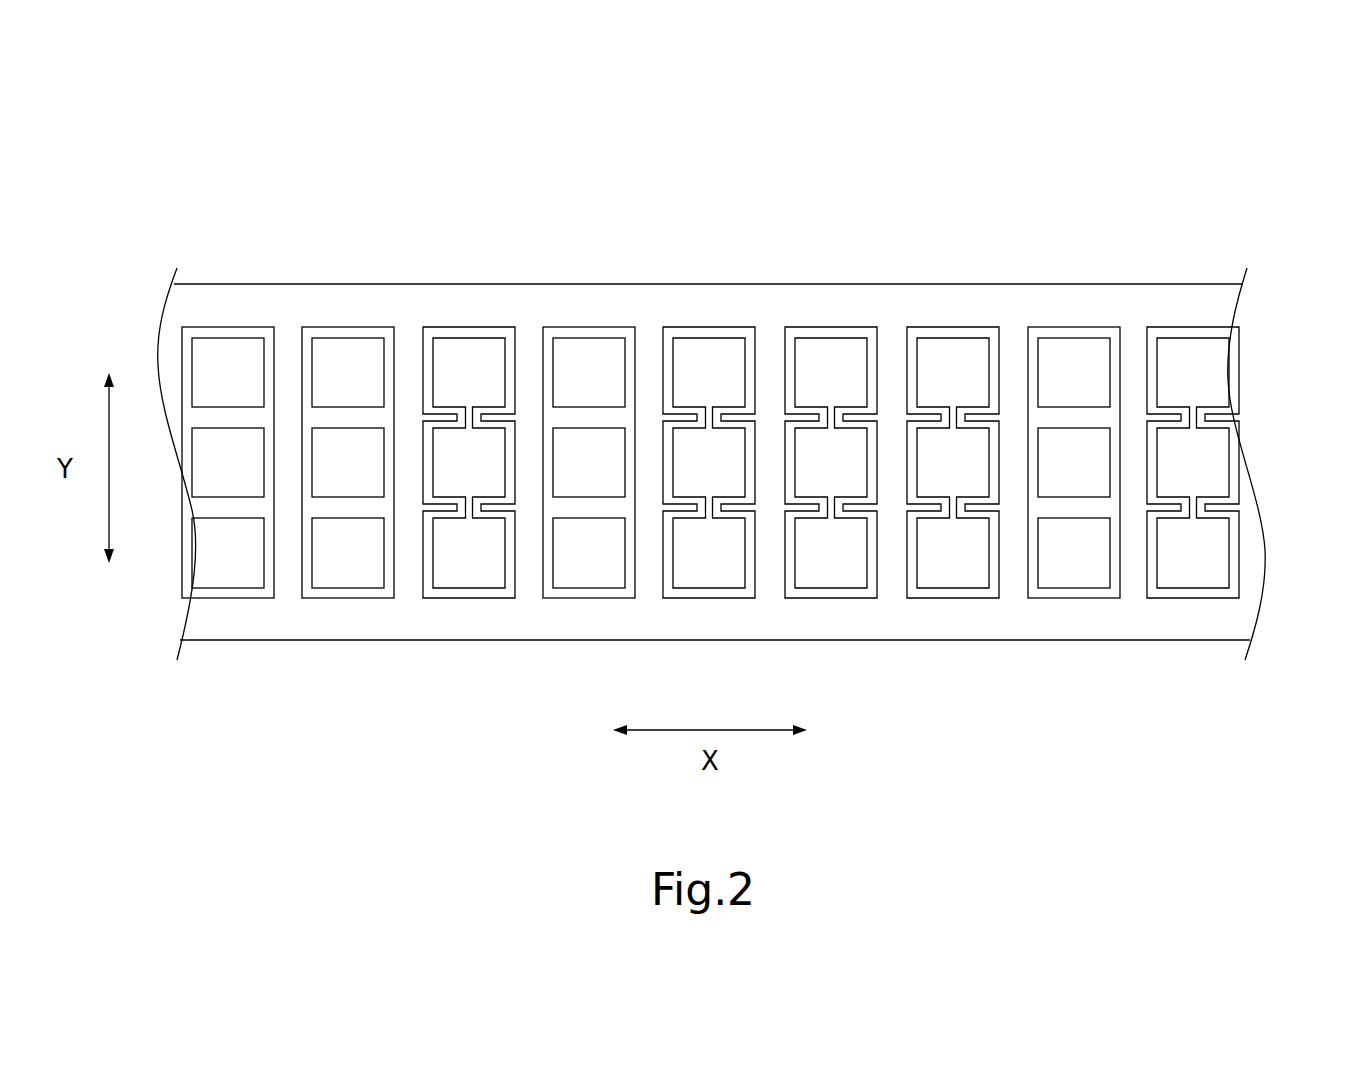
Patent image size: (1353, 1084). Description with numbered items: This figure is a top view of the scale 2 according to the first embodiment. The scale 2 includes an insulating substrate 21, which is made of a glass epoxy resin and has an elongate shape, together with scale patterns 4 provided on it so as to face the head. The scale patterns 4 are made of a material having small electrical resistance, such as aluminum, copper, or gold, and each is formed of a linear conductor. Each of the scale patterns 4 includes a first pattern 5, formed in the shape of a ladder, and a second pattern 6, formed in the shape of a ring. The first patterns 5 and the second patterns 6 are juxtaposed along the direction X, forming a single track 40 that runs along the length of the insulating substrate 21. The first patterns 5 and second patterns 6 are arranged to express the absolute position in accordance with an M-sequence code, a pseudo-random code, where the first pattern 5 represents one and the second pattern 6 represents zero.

The scale 2 is at (751, 424).
The scale patterns 4 is at (751, 454).
The track 40 is at (1256, 459).
The first pattern 5 is at (355, 327).
The second pattern 6 is at (468, 327).
The insulating substrate 21 is at (882, 615).